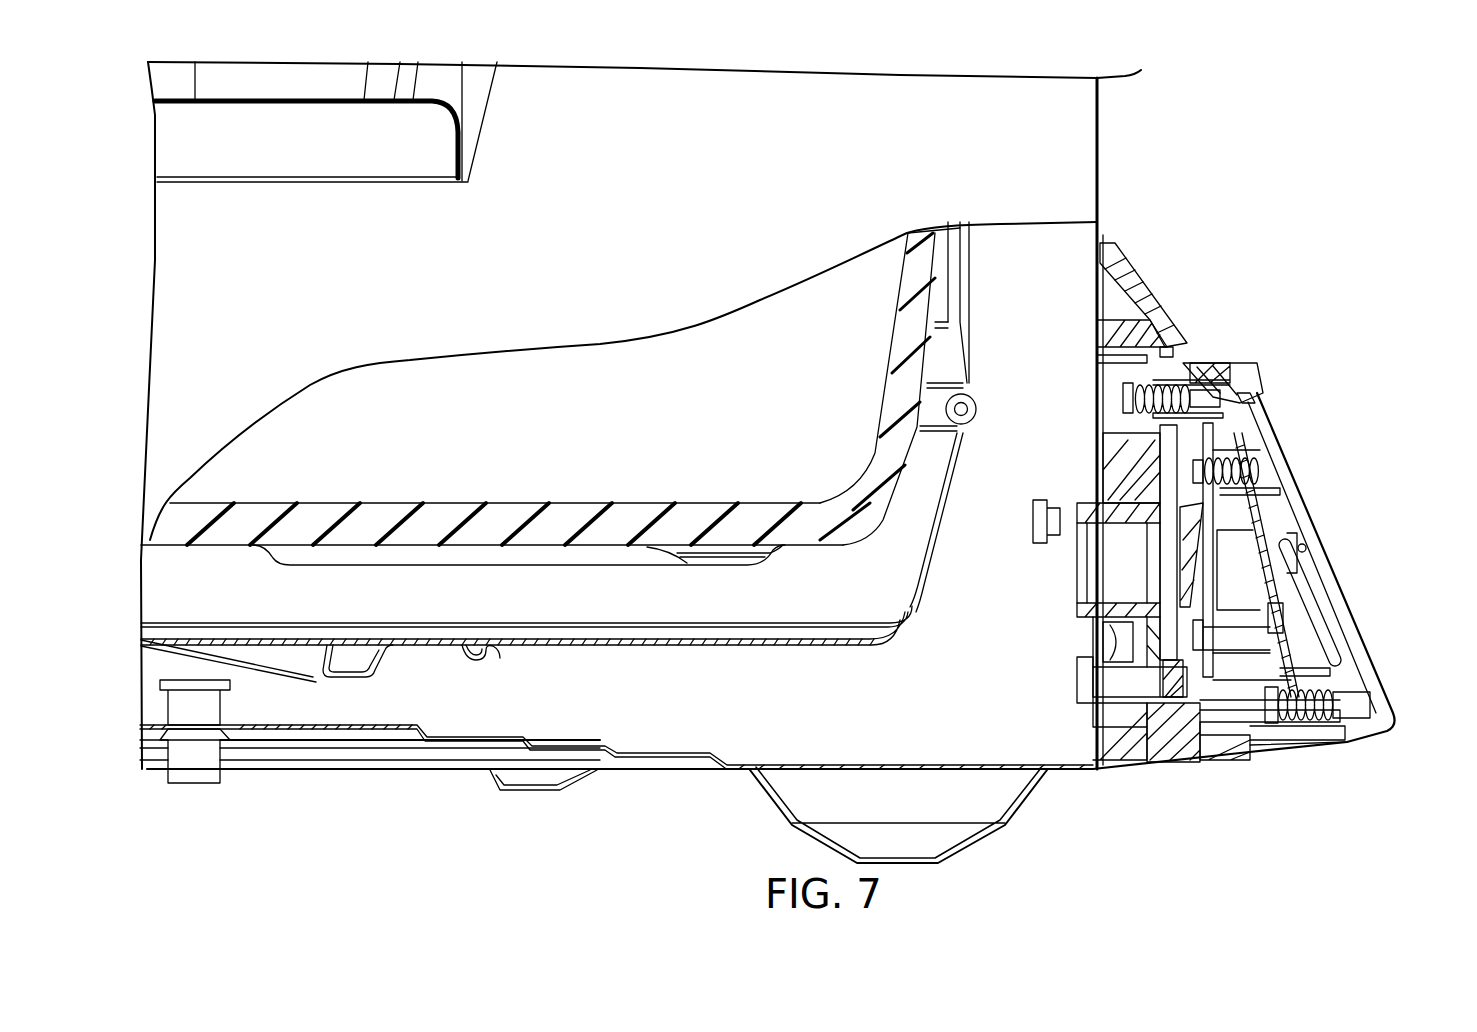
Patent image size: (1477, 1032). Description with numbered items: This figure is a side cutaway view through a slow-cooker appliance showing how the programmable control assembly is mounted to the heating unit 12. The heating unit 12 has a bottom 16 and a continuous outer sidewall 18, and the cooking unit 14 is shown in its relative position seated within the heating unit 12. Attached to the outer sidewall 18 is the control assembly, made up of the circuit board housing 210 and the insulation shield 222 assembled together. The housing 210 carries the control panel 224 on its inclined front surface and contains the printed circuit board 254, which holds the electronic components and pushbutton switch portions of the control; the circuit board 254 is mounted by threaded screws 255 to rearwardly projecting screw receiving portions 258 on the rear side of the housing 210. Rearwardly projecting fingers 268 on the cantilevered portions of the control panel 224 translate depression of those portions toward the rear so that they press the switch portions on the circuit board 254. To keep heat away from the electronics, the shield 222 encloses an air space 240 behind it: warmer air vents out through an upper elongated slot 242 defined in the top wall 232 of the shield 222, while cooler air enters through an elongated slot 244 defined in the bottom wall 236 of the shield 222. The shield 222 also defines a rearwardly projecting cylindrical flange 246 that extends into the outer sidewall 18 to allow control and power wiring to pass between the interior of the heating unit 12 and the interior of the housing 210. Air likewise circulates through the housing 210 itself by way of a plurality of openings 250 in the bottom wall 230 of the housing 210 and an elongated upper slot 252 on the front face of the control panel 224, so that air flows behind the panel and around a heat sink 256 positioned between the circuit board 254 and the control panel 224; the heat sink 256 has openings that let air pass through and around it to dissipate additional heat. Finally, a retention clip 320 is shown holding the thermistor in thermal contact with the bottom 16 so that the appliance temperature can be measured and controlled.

The heating unit 12 is at (687, 708).
The cooking unit 14 is at (707, 513).
The bottom 16 is at (603, 648).
The outer sidewall 18 is at (1103, 108).
The circuit board housing 210 is at (1247, 367).
The insulation shield 222 is at (1153, 340).
The control panel 224 is at (1310, 504).
The bottom wall 230 is at (1227, 765).
The top wall 232 is at (1142, 288).
The bottom wall 236 is at (1170, 765).
The air space 240 is at (1130, 488).
The upper elongated slot 242 is at (1183, 357).
The elongated slot 244 is at (1123, 765).
The cylindrical flange 246 is at (1077, 607).
The openings 250 is at (1303, 740).
The elongated upper slot 252 is at (1262, 400).
The printed circuit board 254 is at (1120, 702).
The threaded screws 255 is at (1262, 470).
The heat sink 256 is at (1267, 537).
The screw receiving portions 258 is at (1335, 675).
The fingers 268 is at (1300, 632).
The retention clip 320 is at (487, 660).